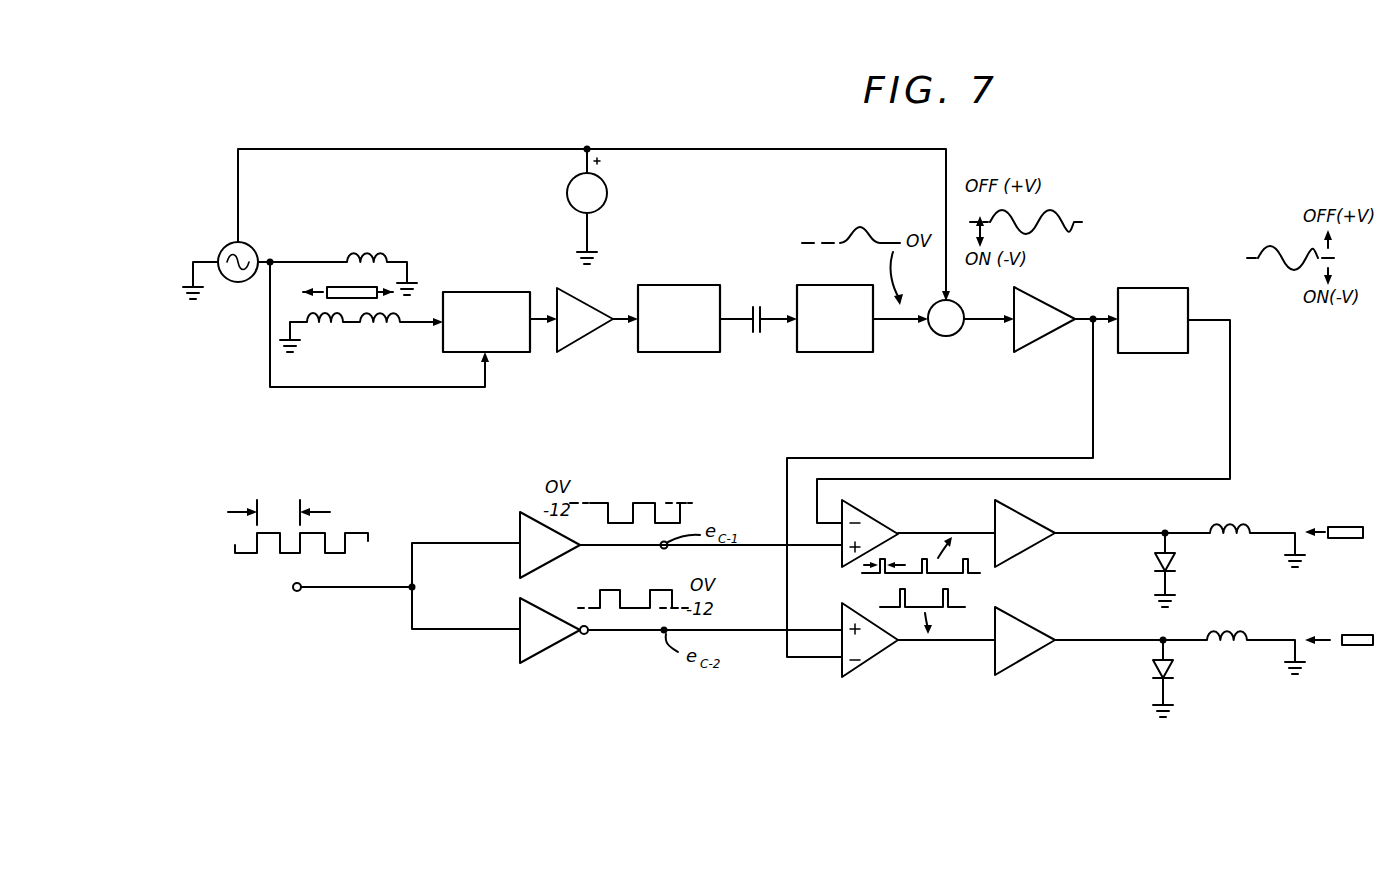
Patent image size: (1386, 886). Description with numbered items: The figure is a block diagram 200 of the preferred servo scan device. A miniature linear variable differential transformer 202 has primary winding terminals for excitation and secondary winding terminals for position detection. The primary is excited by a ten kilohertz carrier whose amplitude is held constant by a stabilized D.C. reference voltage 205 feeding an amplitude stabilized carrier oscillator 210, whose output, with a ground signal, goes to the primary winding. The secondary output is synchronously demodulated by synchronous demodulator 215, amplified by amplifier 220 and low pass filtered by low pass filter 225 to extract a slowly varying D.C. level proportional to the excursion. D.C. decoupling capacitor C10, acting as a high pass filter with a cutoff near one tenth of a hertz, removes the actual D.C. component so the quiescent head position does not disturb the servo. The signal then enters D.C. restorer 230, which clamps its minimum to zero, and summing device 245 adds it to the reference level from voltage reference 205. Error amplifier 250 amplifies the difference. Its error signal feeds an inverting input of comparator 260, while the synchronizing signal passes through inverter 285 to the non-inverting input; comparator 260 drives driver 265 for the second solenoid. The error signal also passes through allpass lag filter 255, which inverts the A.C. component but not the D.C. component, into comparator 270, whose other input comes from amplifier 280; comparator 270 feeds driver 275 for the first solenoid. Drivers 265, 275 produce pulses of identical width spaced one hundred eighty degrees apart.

The block diagram 200 is at (416, 682).
The linear variable differential transformer 202 is at (386, 371).
The D.C. reference voltage 205 is at (608, 183).
The carrier oscillator 210 is at (252, 250).
The synchronous demodulator 215 is at (510, 303).
The amplifier 220 is at (577, 322).
The low pass filter 225 is at (664, 343).
The D.C. restorer 230 is at (847, 338).
The D.C. decoupling capacitor C10 is at (758, 340).
The summing device 245 is at (946, 337).
The error amplifier 250 is at (1015, 338).
The allpass lag filter 255 is at (1192, 243).
The comparator 260 is at (873, 650).
The driver 265 is at (1023, 637).
The comparator 270 is at (873, 522).
The driver 275 is at (1017, 513).
The amplifier 280 is at (528, 530).
The inverter 285 is at (540, 650).